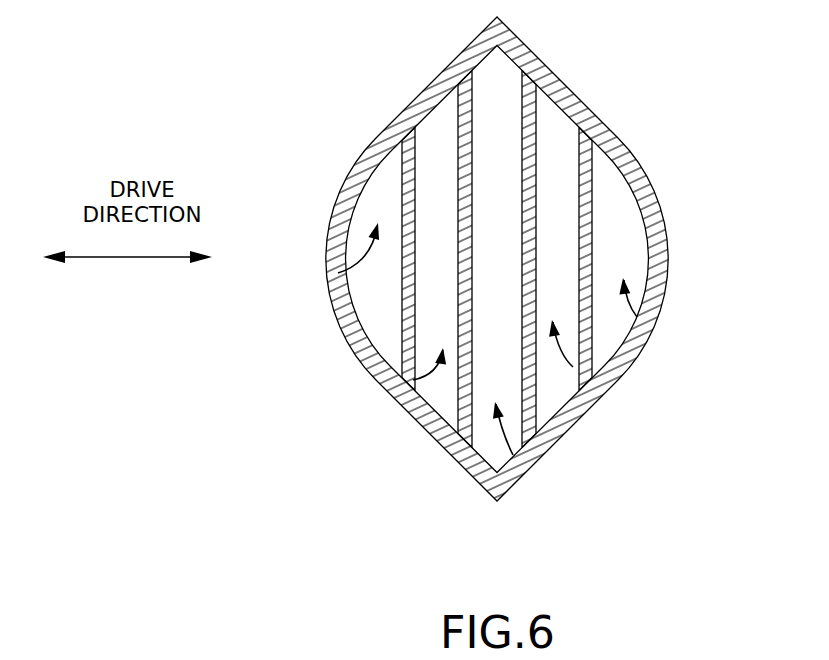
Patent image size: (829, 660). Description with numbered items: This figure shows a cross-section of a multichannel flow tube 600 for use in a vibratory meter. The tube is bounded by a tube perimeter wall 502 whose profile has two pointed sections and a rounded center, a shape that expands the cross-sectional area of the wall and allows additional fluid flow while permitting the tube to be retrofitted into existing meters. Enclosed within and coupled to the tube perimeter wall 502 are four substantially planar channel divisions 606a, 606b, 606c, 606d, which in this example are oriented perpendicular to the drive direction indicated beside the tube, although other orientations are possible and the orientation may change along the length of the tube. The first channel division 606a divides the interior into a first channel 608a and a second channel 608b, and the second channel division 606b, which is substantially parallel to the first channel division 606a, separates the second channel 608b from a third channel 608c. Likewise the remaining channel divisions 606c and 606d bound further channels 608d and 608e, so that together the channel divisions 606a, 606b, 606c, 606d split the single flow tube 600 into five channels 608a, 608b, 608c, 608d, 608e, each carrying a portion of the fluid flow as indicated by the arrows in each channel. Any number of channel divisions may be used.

The multichannel flow tube 600 is at (274, 118).
The tube perimeter wall 502 is at (597, 133).
The first channel division 606a is at (408, 315).
The second channel division 606b is at (458, 430).
The channel division 606c is at (526, 190).
The channel division 606d is at (593, 237).
The channel 608a is at (340, 272).
The channel 608b is at (413, 380).
The channel 608c is at (513, 455).
The channel 608d is at (573, 367).
The channel 608e is at (637, 317).